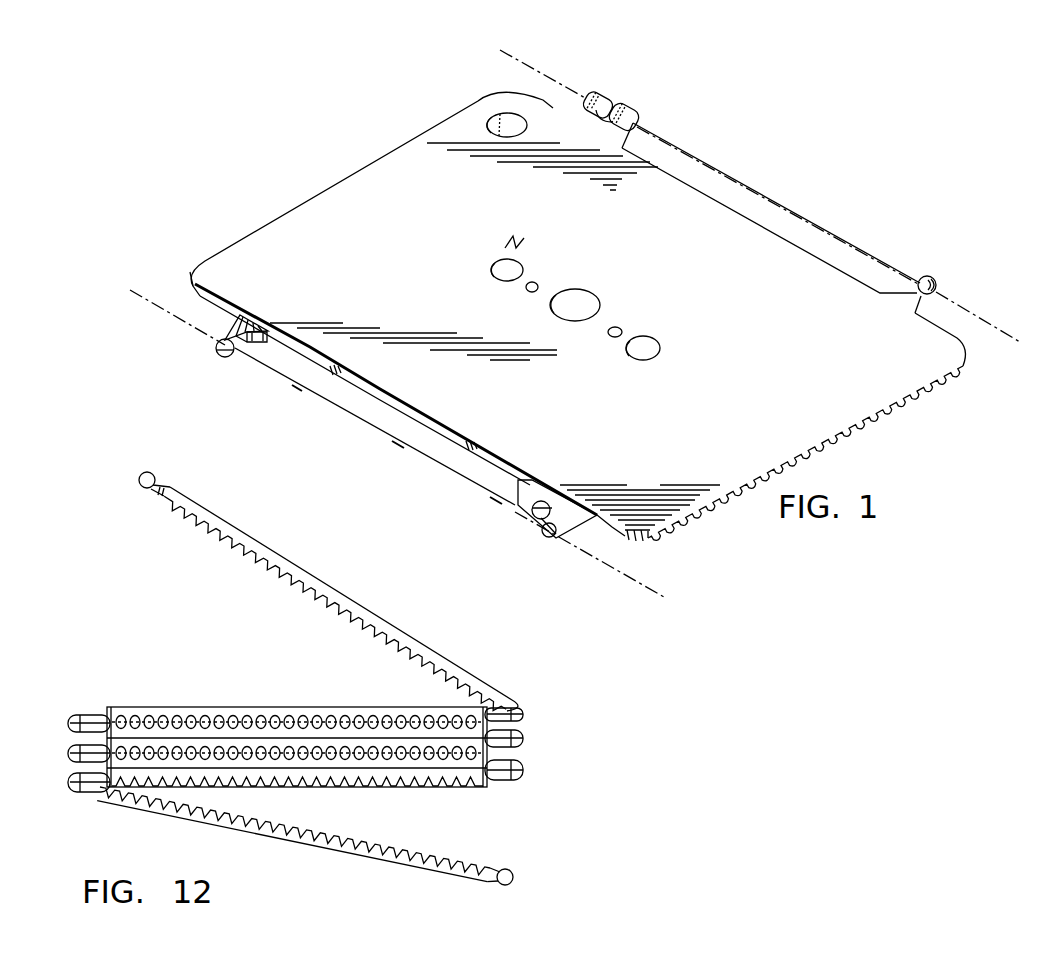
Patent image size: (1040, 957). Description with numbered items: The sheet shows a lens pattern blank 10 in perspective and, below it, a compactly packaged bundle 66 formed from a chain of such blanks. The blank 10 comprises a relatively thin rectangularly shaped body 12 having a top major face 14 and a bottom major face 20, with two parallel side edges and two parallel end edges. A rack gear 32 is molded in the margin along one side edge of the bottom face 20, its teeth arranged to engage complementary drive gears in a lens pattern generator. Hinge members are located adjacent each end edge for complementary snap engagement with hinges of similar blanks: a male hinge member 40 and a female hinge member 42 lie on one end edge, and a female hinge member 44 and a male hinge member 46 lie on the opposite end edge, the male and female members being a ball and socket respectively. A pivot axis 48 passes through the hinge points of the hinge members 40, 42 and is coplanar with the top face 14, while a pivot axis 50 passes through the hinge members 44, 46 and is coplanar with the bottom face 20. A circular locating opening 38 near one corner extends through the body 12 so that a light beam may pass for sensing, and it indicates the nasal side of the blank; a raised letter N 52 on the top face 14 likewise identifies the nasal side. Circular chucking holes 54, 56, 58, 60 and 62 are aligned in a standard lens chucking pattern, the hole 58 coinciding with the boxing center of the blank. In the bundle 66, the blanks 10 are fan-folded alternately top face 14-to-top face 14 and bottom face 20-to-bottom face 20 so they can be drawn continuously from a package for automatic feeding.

In FIG. 1, the blank 10 is at (459, 98).
In FIG. 12, the blank 10 is at (287, 588).
In FIG. 1, the body 12 is at (213, 247).
In FIG. 1, the top major face 14 is at (784, 360).
In FIG. 12, the top major face 14 is at (203, 530).
In FIG. 12, the bottom major face 20 is at (254, 524).
In FIG. 1, the rack gear 32 is at (889, 413).
In FIG. 1, the locating opening 38 is at (507, 113).
In FIG. 1, the male hinge member 40 is at (932, 270).
In FIG. 1, the female hinge member 42 is at (615, 96).
In FIG. 1, the female hinge member 44 is at (528, 535).
In FIG. 1, the male hinge member 46 is at (215, 352).
In FIG. 1, the pivot axis 48 is at (1000, 330).
In FIG. 1, the pivot axis 50 is at (622, 573).
In FIG. 1, the marking 52 is at (505, 238).
In FIG. 1, the chucking hole 54 is at (490, 270).
In FIG. 1, the chucking hole 56 is at (526, 291).
In FIG. 1, the chucking hole 58 is at (585, 290).
In FIG. 1, the chucking hole 60 is at (621, 330).
In FIG. 1, the chucking hole 62 is at (660, 344).
In FIG. 12, the compactly packaged bundle 66 is at (94, 615).